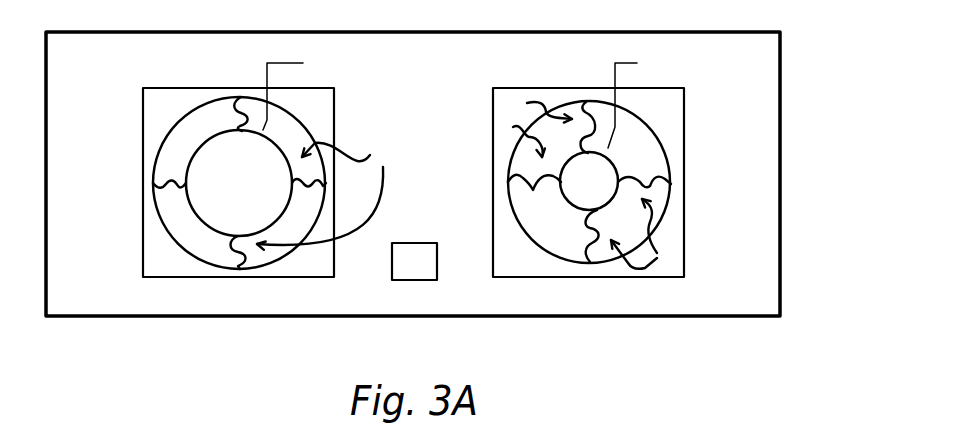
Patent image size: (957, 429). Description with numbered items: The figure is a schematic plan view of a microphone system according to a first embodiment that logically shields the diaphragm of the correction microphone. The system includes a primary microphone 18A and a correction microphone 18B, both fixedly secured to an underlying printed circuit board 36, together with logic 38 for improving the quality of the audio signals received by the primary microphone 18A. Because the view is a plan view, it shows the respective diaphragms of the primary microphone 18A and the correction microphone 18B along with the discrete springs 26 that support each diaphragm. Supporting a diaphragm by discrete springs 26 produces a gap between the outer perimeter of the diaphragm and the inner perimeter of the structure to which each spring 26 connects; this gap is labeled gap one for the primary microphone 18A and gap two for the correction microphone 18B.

The printed circuit board 36 is at (752, 173).
The primary microphone 18A is at (152, 244).
The correction microphone 18B is at (497, 165).
The springs 26 is at (469, 185).
The logic 38 is at (420, 272).